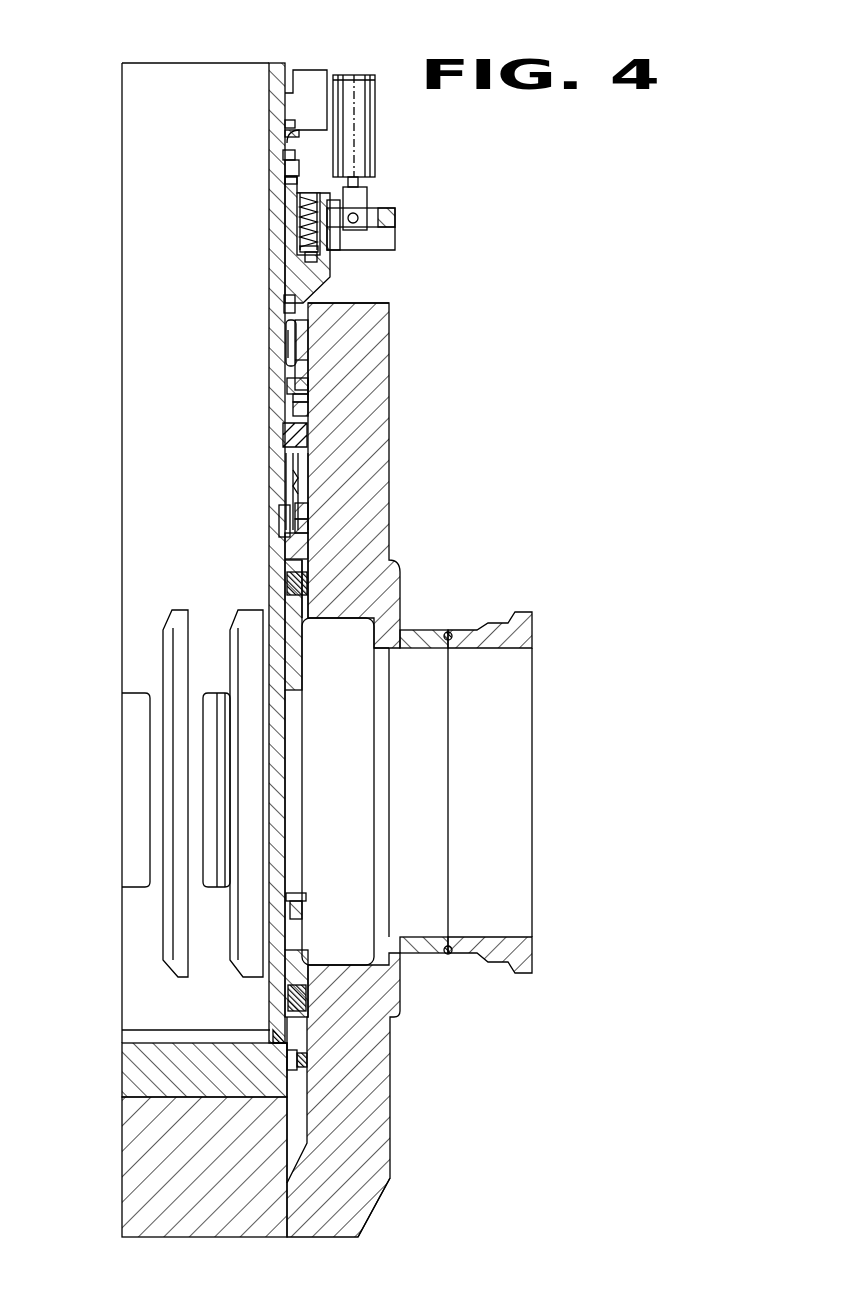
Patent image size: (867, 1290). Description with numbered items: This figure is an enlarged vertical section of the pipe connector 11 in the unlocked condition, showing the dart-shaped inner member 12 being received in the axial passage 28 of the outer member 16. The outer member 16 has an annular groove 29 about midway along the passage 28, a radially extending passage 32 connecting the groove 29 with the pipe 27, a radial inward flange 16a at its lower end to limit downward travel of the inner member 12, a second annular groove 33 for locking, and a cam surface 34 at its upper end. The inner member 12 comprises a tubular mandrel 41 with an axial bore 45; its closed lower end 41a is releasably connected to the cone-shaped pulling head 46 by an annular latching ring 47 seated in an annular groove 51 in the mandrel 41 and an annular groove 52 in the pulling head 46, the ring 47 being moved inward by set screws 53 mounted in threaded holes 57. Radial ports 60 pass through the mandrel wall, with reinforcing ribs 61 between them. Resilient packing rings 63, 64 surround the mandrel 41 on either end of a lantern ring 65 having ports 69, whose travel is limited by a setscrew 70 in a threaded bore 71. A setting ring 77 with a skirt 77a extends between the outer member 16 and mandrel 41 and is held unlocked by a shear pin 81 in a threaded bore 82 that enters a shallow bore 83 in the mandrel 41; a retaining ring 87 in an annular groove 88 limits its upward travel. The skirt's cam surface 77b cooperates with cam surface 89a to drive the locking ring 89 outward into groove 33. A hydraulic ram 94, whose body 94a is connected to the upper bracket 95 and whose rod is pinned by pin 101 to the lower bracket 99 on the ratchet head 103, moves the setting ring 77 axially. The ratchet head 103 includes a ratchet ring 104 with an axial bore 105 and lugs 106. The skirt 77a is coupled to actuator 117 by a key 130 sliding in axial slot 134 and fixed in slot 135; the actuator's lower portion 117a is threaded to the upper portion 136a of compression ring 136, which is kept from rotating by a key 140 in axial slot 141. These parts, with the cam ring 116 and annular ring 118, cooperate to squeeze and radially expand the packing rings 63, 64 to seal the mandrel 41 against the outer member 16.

The assembly 11 is at (442, 406).
The inner member 12 is at (317, 460).
The outer member 16 is at (392, 483).
The radial inward flange 16a is at (358, 1216).
The pipe 27 is at (523, 637).
The axial passage 28 is at (300, 1114).
The annular groove 29 is at (392, 960).
The radially extending passage 32 is at (382, 648).
The second annular groove 33 is at (309, 390).
The cam surface 34 is at (323, 300).
The tubular mandrel 41 is at (273, 62).
The closed lower end 41a is at (137, 1080).
The bore 45 is at (266, 72).
The pulling head 46 is at (130, 1182).
The annular latching ring 47 is at (273, 1042).
The annular groove 51 is at (283, 1080).
The annular groove 52 is at (303, 1053).
The set screws 53 is at (307, 1058).
The threaded hole 57 is at (308, 1067).
The ports 60 is at (212, 760).
The reinforcing ribs 61 is at (183, 628).
The packing ring 63 is at (305, 988).
The packing ring 64 is at (308, 575).
The lantern ring 65 is at (295, 656).
The ports 69 is at (222, 798).
The setscrew 70 is at (298, 900).
The threaded bore 71 is at (303, 910).
The setting ring 77 is at (293, 277).
The ring skirt 77a is at (305, 335).
The cam surface 77b is at (305, 368).
The shear pin 81 is at (281, 170).
The threaded bore 82 is at (282, 182).
The shallow bore 83 is at (290, 185).
The retaining ring 87 is at (284, 153).
The annular groove 88 is at (291, 145).
The locking ring 89 is at (298, 402).
The cam surface 89a is at (293, 383).
The hydraulic ram 94 is at (382, 130).
The body 94a is at (375, 108).
The bracket 95 is at (308, 82).
The bracket 99 is at (388, 238).
The pin 101 is at (358, 216).
The ratchet head 103 is at (332, 194).
The ratchet ring 104 is at (300, 213).
The axial bore 105 is at (300, 247).
The lug 106 is at (318, 256).
The cam ring 116 is at (287, 558).
The actuator 117 is at (304, 437).
The lower portion 117a is at (306, 520).
The annular ring 118 is at (304, 412).
The key 130 is at (289, 358).
The axial slot 134 is at (290, 311).
The slot 135 is at (290, 342).
The compression ring 136 is at (306, 537).
The upper portion 136a is at (290, 468).
The key 140 is at (279, 520).
The axial slot 141 is at (293, 490).